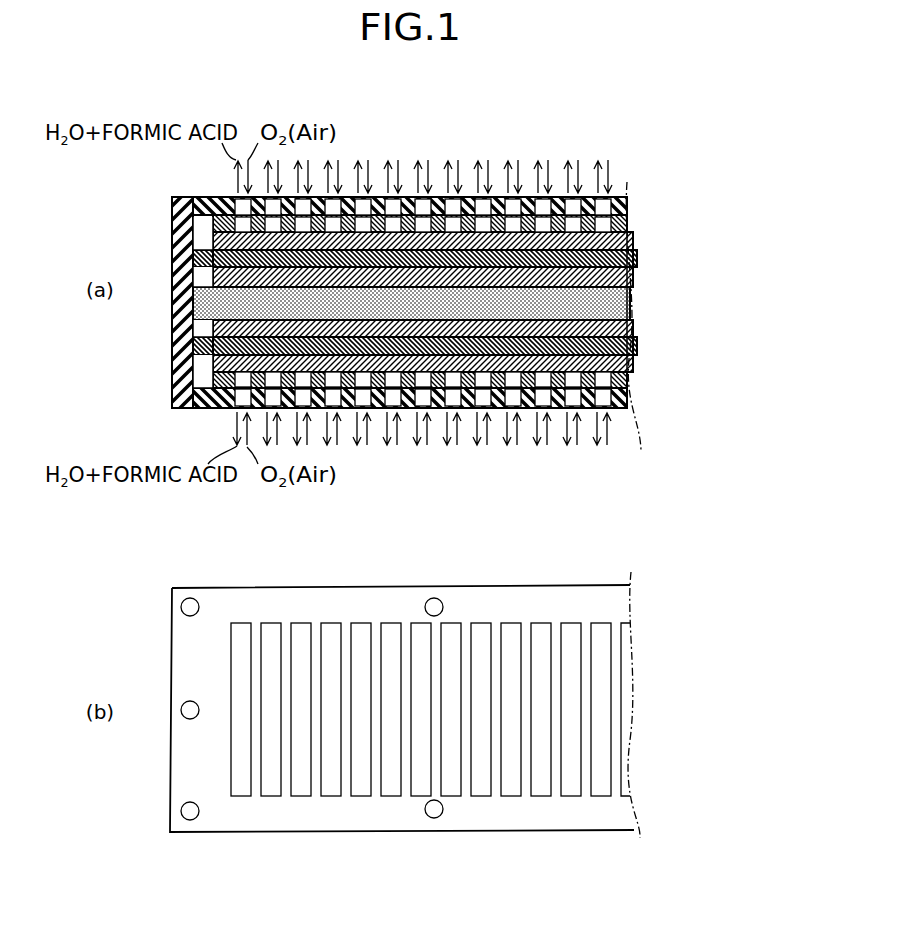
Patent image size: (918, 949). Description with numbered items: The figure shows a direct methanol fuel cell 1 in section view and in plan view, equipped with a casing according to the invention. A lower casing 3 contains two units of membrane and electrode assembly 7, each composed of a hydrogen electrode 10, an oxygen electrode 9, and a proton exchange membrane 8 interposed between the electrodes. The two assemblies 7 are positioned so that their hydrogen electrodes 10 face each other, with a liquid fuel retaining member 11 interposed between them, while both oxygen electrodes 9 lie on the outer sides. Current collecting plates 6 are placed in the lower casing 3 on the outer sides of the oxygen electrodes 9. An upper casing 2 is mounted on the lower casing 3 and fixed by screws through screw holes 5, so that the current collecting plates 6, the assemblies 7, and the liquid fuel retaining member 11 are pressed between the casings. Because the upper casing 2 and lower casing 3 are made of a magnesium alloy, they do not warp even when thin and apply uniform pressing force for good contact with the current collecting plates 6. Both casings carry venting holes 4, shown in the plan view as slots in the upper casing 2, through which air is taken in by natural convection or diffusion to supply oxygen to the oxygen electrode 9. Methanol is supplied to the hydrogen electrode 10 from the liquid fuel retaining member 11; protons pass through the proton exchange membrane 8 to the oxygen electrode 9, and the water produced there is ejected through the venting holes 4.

The fuel cell 1 is at (415, 126).
The upper casing 2 is at (628, 199).
The lower casing 3 is at (628, 404).
The venting holes 4 is at (582, 203).
The screw holes 5 is at (193, 604).
The current collecting plates 6 is at (630, 228).
The membrane and electrode assembly 7 is at (695, 222).
The proton exchange membrane 8 is at (637, 262).
The oxygen electrode 9 is at (633, 242).
The hydrogen electrode 10 is at (633, 278).
The liquid fuel retaining member 11 is at (630, 304).